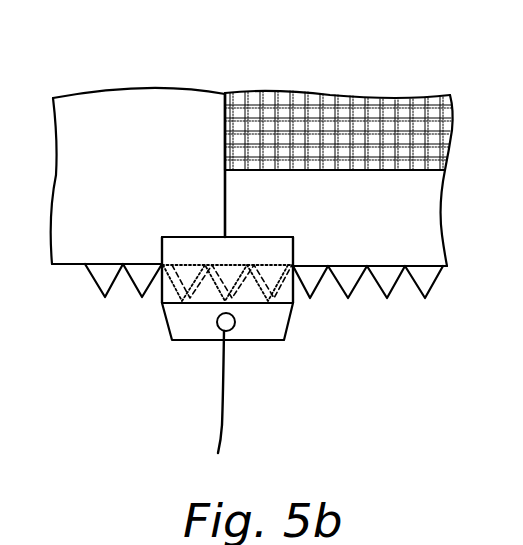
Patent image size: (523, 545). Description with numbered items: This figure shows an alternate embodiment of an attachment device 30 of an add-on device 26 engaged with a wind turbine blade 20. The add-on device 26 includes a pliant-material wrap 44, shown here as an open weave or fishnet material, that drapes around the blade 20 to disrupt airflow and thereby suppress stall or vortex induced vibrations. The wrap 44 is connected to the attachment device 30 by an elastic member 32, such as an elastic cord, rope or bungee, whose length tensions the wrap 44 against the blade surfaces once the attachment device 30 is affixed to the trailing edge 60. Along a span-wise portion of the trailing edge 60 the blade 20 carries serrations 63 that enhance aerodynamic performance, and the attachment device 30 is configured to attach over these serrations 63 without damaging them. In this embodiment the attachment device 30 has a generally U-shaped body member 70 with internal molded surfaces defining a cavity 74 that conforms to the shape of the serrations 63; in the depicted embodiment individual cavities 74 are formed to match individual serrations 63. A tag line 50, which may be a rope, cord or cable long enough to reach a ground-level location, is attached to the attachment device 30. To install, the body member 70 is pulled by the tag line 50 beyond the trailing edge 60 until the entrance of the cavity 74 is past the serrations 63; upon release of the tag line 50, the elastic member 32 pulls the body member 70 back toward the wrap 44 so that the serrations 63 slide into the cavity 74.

The wind turbine blade 20 is at (288, 91).
The add-on device 26 is at (399, 92).
The attachment device 30 is at (148, 240).
The elastic member 32 is at (224, 168).
The wrap 44 is at (452, 131).
The tag line 50 is at (226, 410).
The trailing edge 60 is at (64, 266).
The serrations 63 is at (428, 286).
The body member 70 is at (293, 237).
The cavity 74 is at (276, 292).